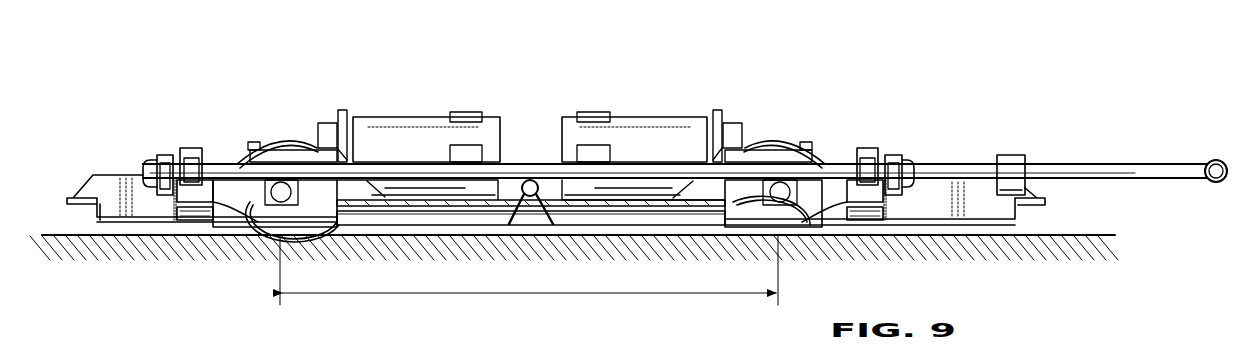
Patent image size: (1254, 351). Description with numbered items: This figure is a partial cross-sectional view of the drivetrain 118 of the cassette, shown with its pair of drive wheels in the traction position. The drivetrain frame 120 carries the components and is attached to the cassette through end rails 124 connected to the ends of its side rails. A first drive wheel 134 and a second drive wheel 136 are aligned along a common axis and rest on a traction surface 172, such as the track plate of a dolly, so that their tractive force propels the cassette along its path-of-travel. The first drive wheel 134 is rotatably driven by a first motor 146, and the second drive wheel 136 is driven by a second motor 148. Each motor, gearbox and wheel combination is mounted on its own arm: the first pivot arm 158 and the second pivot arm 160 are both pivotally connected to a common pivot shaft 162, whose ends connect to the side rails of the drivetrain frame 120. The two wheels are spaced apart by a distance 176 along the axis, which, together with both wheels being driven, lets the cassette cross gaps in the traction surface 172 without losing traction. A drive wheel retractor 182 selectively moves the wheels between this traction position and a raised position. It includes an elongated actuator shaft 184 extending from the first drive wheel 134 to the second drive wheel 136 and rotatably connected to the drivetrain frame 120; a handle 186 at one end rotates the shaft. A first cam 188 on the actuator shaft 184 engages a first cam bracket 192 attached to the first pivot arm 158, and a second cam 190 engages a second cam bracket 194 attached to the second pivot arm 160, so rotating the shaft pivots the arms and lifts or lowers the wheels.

The drivetrain 118 is at (745, 98).
The drivetrain frame 120 is at (987, 224).
The end rails 124 is at (73, 198).
The first drive wheel 134 is at (283, 140).
The second drive wheel 136 is at (787, 140).
The first motor 146 is at (412, 117).
The second motor 148 is at (655, 117).
The first pivot arm 158 is at (435, 207).
The second pivot arm 160 is at (622, 207).
The pivot shaft 162 is at (530, 180).
The traction surface 172 is at (1082, 233).
The distance 176 is at (658, 294).
The drive wheel retractor 182 is at (1088, 162).
The actuator shaft 184 is at (500, 160).
The handle 186 is at (1221, 160).
The first cam 188 is at (162, 202).
The second cam 190 is at (867, 220).
The first cam bracket 192 is at (190, 148).
The second cam bracket 194 is at (867, 148).